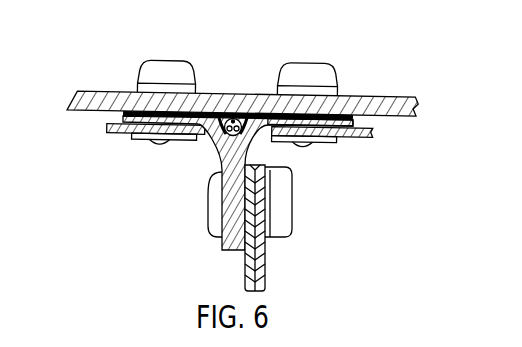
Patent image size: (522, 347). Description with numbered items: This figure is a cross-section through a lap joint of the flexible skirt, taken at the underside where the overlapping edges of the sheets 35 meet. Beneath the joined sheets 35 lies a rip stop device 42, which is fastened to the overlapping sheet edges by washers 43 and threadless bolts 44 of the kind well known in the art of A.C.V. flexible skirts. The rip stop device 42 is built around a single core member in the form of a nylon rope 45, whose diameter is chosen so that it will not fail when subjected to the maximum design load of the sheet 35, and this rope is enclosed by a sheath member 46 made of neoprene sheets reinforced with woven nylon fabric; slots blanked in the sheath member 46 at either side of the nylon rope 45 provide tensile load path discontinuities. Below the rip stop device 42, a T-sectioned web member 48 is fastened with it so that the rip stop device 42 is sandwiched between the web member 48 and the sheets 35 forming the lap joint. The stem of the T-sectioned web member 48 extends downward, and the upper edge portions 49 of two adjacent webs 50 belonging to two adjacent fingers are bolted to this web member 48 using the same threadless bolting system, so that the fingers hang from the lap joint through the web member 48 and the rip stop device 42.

The sheet 35 is at (95, 92).
The rip stop device 42 is at (372, 122).
The washer 43 is at (328, 143).
The threadless bolt 44 is at (155, 143).
The nylon rope 45 is at (233, 118).
The sheath member 46 is at (345, 130).
The T-sectioned web member 48 is at (217, 147).
The upper edge portion 49 is at (258, 168).
The web 50 is at (262, 248).